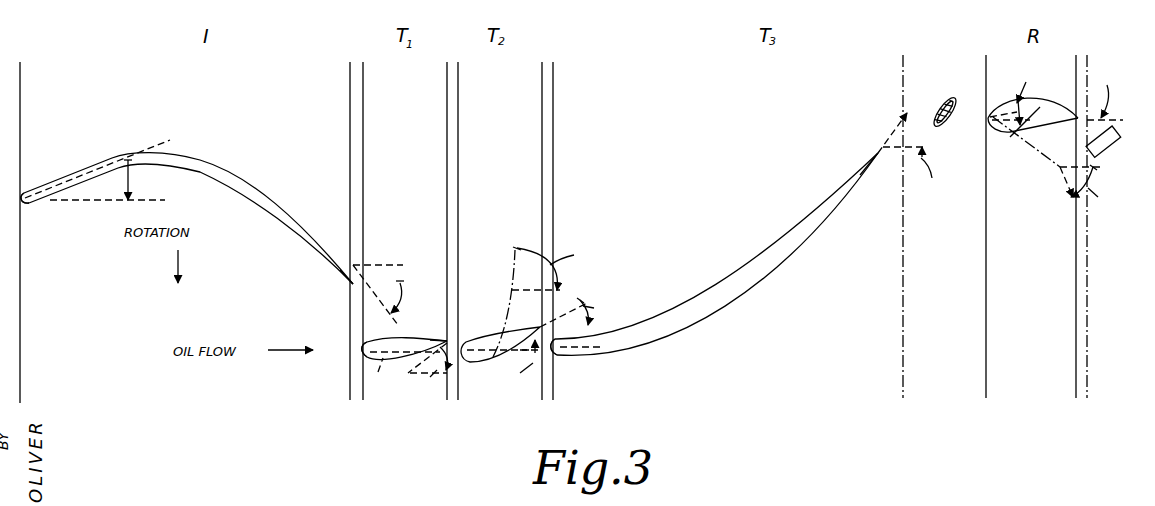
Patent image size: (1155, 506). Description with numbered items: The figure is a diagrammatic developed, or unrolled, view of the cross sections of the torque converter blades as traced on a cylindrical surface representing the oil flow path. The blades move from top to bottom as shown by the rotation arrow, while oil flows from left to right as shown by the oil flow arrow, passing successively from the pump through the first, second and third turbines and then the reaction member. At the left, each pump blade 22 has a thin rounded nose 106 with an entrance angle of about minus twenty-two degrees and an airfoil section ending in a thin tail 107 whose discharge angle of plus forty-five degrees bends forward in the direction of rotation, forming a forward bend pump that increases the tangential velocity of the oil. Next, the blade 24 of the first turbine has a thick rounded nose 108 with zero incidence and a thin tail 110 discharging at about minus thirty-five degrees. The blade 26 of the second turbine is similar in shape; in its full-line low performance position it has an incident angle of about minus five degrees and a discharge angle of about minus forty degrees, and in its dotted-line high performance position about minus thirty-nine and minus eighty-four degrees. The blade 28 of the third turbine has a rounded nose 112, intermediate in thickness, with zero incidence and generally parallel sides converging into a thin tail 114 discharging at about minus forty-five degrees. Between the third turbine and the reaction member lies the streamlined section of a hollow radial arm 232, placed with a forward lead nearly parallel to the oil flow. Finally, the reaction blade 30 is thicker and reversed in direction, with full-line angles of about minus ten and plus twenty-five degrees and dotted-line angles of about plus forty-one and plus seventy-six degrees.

The pump blade 22 is at (200, 167).
The thin rounded nose 106 is at (27, 196).
The thin tail 107 is at (340, 274).
The thick rounded nose 108 is at (367, 360).
The thin tail 110 is at (445, 340).
The blade of the first turbine 24 is at (397, 372).
The blade of the second turbine 26 is at (482, 363).
The rounded nose 112 is at (562, 356).
The blade of the third turbine 28 is at (683, 320).
The thin tail 114 is at (877, 150).
The stator vane 232 is at (953, 118).
The reaction blade 30 is at (1038, 118).